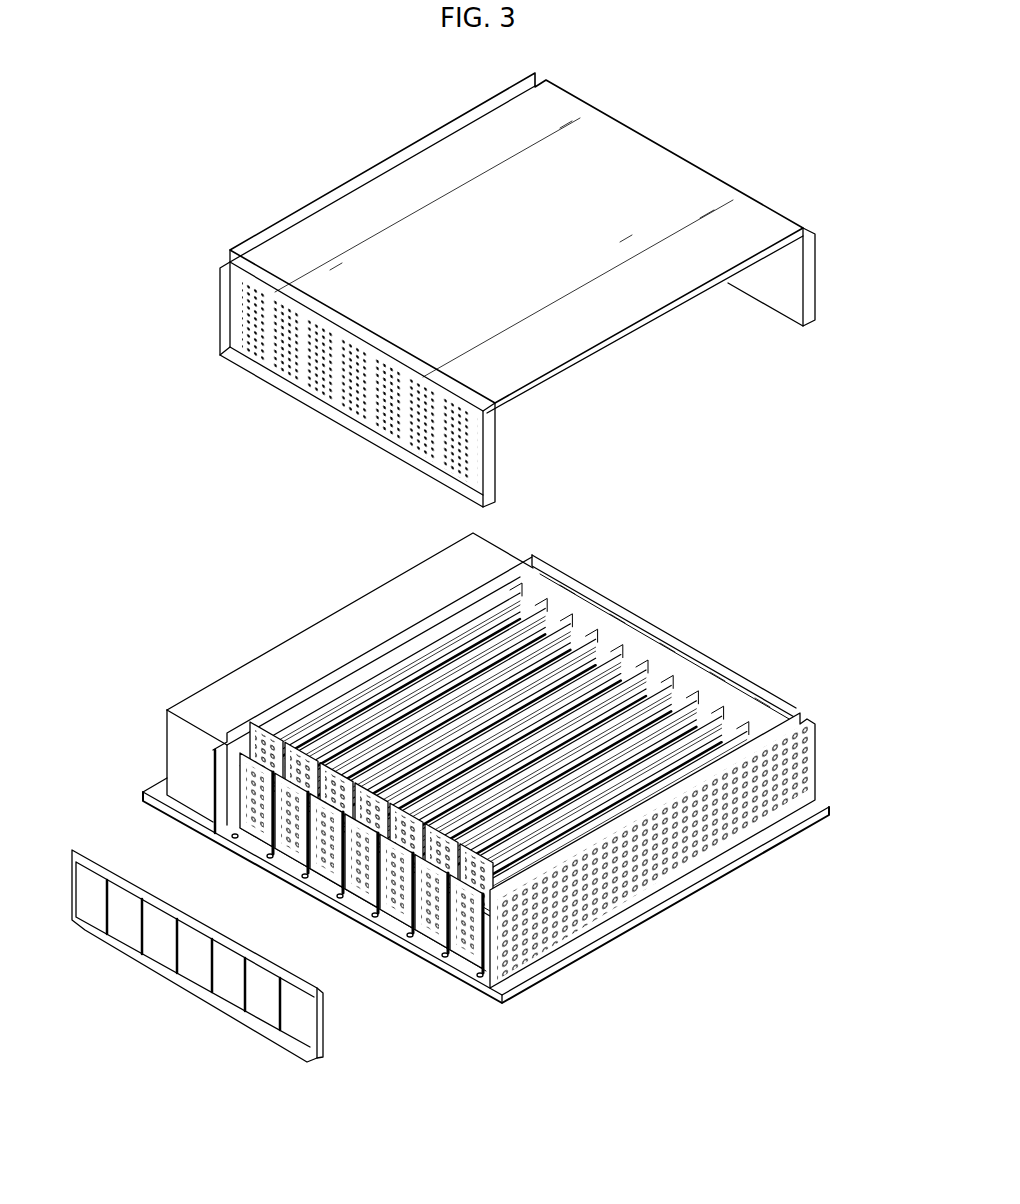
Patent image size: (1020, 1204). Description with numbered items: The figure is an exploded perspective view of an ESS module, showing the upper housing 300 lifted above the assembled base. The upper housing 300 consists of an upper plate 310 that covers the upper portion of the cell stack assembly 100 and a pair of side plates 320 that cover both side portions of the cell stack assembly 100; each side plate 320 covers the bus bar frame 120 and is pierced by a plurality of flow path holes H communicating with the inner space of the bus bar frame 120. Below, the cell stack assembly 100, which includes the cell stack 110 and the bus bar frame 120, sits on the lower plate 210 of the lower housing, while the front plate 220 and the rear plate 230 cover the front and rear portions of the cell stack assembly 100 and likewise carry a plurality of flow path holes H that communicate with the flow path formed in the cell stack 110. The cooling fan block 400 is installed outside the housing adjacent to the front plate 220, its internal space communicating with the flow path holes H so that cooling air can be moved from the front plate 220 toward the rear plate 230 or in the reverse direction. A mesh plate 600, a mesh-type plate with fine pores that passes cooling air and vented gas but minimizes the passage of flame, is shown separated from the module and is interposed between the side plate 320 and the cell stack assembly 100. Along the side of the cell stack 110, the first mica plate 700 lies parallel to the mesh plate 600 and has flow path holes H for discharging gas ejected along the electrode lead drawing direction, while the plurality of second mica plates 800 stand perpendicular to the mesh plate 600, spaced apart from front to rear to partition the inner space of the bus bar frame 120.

The cell stack assembly 100 is at (474, 661).
The cell stack 110 is at (608, 787).
The bus bar frame 120 is at (728, 691).
The lower plate 210 is at (400, 938).
The front plate 220 is at (227, 768).
The rear plate 230 is at (808, 757).
The upper housing 300 is at (516, 290).
The upper plate 310 is at (414, 178).
The side plate 320 is at (238, 312).
The cooling fan block 400 is at (208, 700).
The mesh plate 600 is at (160, 965).
The first mica plate 700 is at (338, 850).
The second mica plate 800 is at (288, 840).
The flow path holes H is at (248, 297).